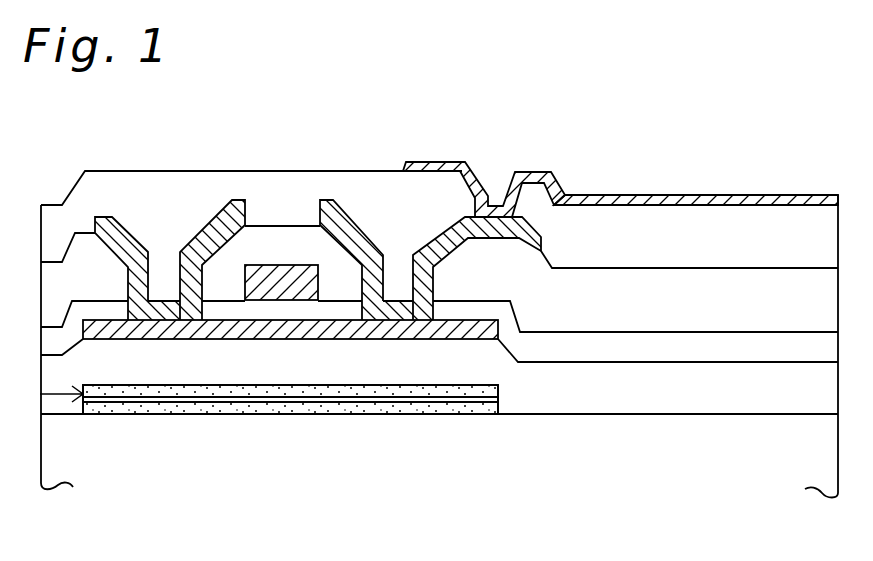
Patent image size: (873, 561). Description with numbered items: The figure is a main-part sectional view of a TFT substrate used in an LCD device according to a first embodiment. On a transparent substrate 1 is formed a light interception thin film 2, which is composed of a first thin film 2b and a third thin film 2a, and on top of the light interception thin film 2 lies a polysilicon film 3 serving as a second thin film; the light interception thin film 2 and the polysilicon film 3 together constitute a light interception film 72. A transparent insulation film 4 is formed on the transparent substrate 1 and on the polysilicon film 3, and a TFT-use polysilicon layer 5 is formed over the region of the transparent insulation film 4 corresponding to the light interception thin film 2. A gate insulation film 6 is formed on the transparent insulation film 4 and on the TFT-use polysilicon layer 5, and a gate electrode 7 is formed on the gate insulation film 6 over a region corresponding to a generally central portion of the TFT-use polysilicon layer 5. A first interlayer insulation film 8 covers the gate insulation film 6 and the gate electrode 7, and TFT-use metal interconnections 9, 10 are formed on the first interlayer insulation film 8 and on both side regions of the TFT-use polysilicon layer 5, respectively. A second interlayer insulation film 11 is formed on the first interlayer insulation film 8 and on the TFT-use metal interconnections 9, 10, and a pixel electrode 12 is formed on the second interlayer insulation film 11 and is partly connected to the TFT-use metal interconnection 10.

The transparent substrate 1 is at (543, 445).
The light interception thin film 2 is at (217, 413).
The third thin film 2a is at (378, 412).
The first thin film 2b is at (442, 400).
The polysilicon film 3 is at (265, 388).
The transparent insulation film 4 is at (693, 405).
The TFT-use polysilicon layer 5 is at (150, 340).
The gate insulation film 6 is at (778, 350).
The gate electrode 7 is at (298, 292).
The first interlayer insulation film 8 is at (722, 302).
The TFT-use metal interconnection 9 is at (115, 222).
The TFT-use metal interconnection 10 is at (350, 213).
The second interlayer insulation film 11 is at (633, 218).
The pixel electrode 12 is at (476, 170).
The light interception film 72 is at (40, 394).